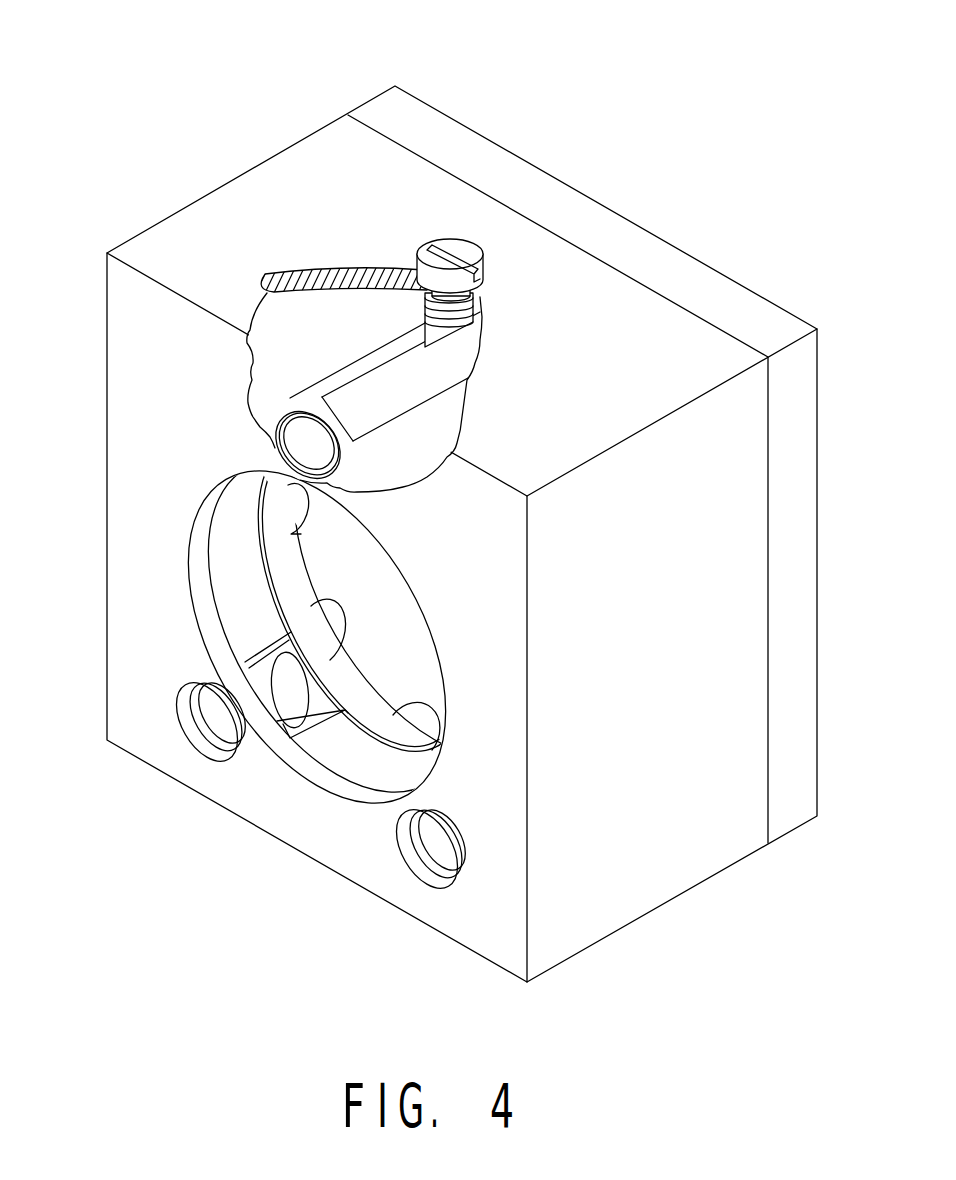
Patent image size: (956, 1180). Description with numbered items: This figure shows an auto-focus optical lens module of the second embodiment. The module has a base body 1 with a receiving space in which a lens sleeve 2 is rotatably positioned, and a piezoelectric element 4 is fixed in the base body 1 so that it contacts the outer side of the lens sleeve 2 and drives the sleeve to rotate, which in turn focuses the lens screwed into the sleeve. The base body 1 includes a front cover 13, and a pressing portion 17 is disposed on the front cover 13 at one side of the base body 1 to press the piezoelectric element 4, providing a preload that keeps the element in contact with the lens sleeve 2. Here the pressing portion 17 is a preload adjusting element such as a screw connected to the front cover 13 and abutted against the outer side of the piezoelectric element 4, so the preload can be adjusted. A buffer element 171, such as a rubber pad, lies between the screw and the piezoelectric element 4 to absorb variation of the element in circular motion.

The base body 1 is at (339, 254).
The lens sleeve 2 is at (403, 463).
The piezoelectric element 4 is at (313, 405).
The front cover 13 is at (613, 325).
The pressing portion 17 is at (465, 248).
The buffer element 171 is at (378, 268).